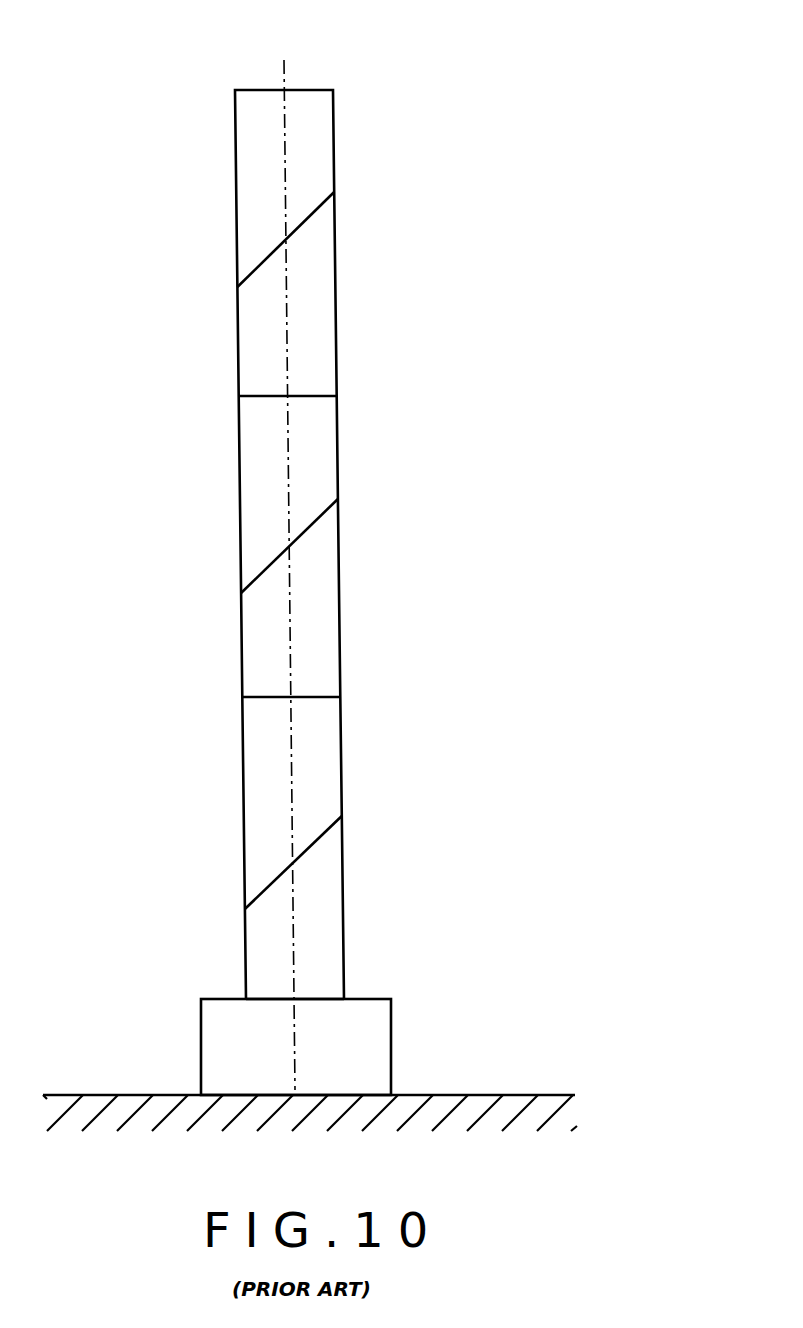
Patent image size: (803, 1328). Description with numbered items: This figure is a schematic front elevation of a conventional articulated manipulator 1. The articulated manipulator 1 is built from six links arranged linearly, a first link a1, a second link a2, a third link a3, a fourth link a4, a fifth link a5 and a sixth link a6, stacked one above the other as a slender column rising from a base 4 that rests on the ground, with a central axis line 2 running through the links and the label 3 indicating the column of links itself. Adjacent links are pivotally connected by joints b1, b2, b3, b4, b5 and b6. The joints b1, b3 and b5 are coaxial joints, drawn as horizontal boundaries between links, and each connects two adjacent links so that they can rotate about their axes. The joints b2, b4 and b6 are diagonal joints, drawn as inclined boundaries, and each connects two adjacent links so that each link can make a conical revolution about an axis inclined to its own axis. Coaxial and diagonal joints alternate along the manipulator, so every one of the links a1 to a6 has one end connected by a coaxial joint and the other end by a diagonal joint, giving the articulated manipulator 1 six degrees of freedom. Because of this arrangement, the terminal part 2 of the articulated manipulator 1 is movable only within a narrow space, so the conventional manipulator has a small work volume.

The articulated manipulator 1 is at (473, 147).
The terminal part 2 is at (307, 100).
The pole column 3 is at (331, 966).
The base 4 is at (375, 1047).
The first link a1 is at (330, 874).
The second link a2 is at (330, 768).
The third link a3 is at (325, 627).
The fourth link a4 is at (323, 450).
The fifth link a5 is at (320, 323).
The sixth link a6 is at (316, 138).
The coaxial joint b1 is at (237, 980).
The diagonal joint b2 is at (235, 903).
The coaxial joint b3 is at (228, 697).
The diagonal joint b4 is at (228, 593).
The coaxial joint b5 is at (225, 395).
The diagonal joint b6 is at (225, 283).